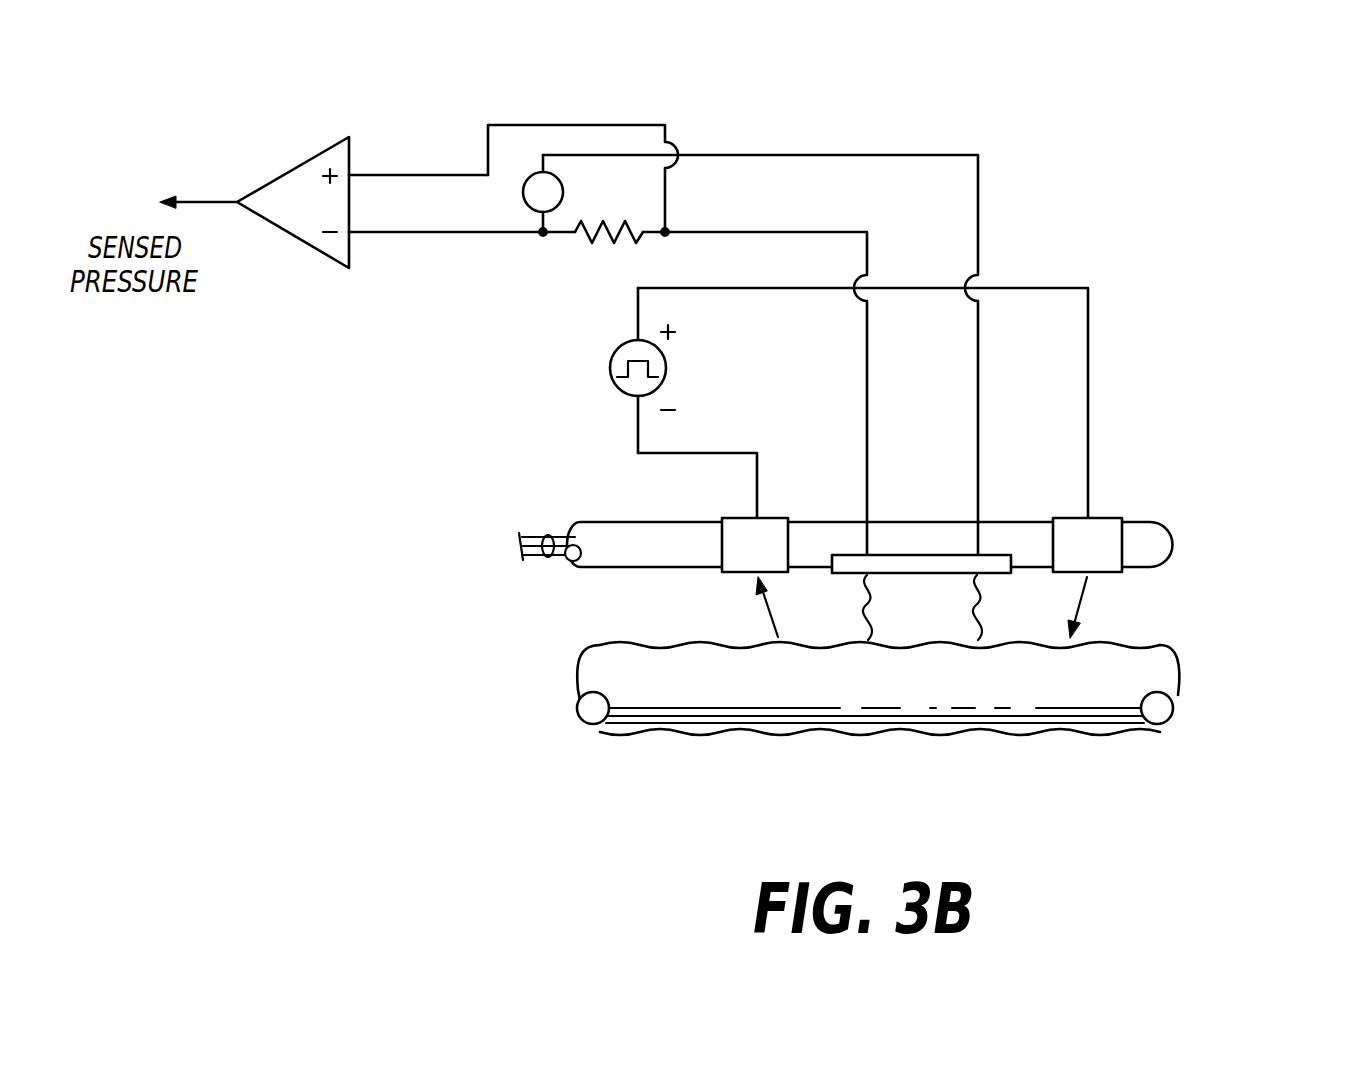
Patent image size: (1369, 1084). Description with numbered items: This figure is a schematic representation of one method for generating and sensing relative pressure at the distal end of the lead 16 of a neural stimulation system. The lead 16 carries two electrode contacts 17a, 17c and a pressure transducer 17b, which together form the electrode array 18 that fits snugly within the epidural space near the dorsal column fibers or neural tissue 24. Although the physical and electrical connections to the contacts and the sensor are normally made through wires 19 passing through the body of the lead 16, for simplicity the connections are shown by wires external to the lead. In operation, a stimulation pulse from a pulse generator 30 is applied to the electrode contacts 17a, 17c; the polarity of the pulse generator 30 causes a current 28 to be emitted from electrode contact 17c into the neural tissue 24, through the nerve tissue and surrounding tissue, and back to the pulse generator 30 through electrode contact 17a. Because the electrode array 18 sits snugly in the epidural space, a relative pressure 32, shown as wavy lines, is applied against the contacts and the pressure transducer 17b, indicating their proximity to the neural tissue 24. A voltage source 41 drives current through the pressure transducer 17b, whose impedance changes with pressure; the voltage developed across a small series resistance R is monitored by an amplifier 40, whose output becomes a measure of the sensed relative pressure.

The electrode array 18 is at (1192, 387).
The amplifier 40 is at (292, 168).
The voltage source 41 is at (524, 199).
The pulse generator 30 is at (612, 366).
The lead 16 is at (625, 520).
The wires 19 is at (549, 528).
The electrode contact 17a is at (770, 518).
The pressure transducer 17b is at (902, 555).
The electrode contact 17c is at (1103, 518).
The current 28 is at (765, 622).
The relative pressure 32 is at (861, 612).
The neural tissue 24 is at (1082, 733).